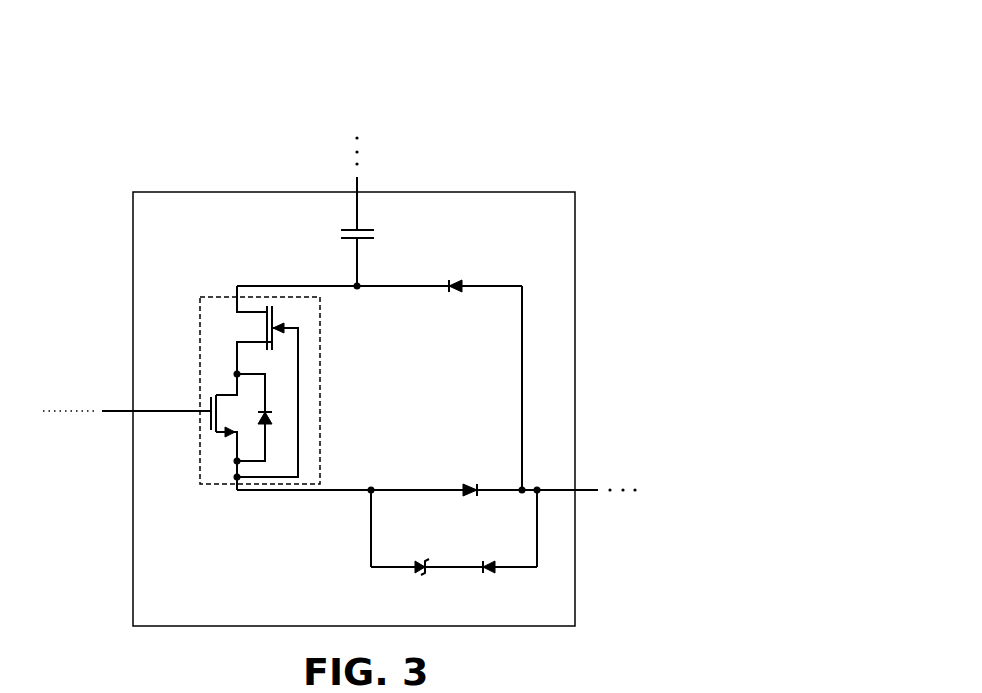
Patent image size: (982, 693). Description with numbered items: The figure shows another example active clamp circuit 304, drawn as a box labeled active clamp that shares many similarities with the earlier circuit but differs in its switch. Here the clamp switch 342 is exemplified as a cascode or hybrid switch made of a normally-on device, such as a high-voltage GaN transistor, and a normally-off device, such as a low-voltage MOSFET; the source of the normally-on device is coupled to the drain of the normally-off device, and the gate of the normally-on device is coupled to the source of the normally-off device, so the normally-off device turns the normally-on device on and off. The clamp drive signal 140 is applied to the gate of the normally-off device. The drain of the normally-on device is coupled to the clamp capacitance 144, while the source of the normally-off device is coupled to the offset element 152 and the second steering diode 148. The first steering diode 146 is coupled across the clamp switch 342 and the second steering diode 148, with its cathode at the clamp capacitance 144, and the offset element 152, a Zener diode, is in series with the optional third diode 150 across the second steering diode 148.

The active clamp circuit 304 is at (121, 232).
The clamp capacitance C1 144 is at (304, 235).
The steering diode D1 146 is at (473, 264).
The steering diode D2 148 is at (467, 460).
The diode D3 150 is at (546, 588).
The offset element Z1 152 is at (398, 597).
The clamp drive signal CD 140 is at (70, 418).
The clamp switch 342 is at (218, 488).